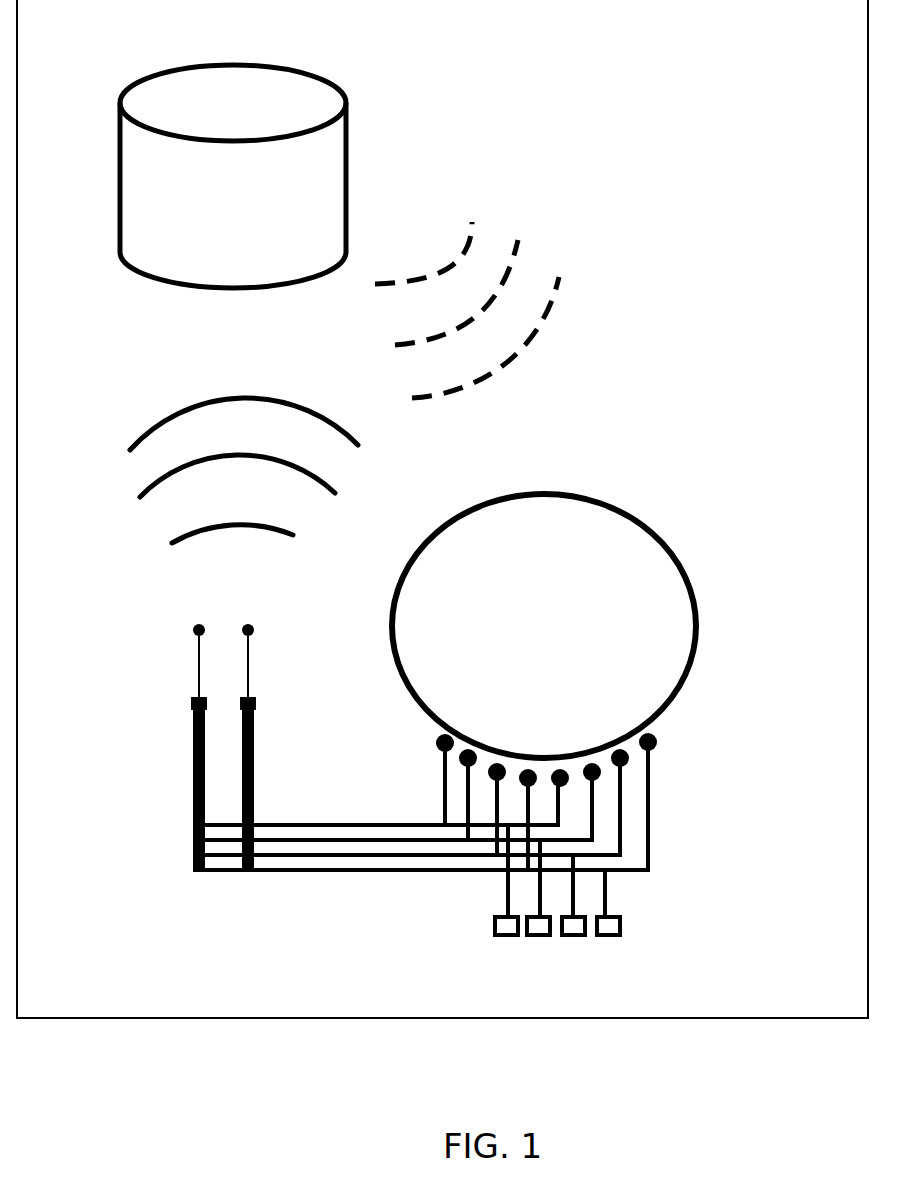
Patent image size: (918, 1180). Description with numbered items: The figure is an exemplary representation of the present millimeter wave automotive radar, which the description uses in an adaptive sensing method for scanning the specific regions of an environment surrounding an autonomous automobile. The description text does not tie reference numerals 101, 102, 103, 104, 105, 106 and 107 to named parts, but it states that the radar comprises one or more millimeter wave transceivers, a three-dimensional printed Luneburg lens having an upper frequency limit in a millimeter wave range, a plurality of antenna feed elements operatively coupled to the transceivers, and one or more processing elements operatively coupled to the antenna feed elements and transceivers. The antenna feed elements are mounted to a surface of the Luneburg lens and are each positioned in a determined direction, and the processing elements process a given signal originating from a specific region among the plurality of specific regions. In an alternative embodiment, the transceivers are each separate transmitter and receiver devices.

The wireless signal waves 101 is at (193, 402).
The antennas 102 is at (192, 703).
The sensors 103 is at (655, 737).
The ball 104 is at (700, 633).
The server / data store 105 is at (182, 72).
The transmitted signal 106 is at (535, 333).
The processing modules 107 is at (620, 925).